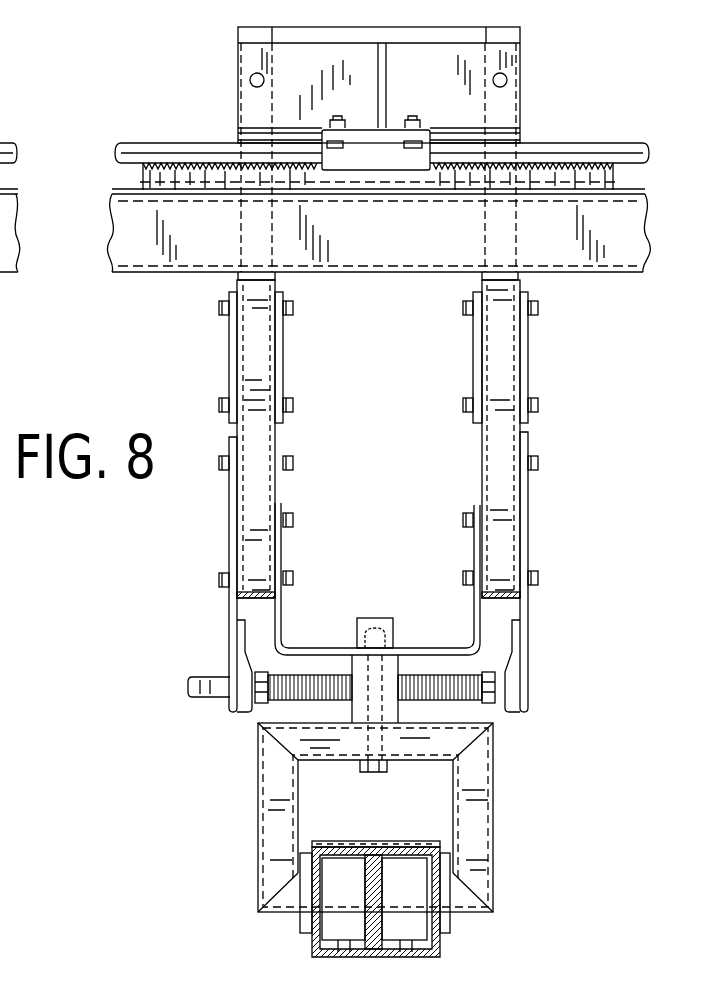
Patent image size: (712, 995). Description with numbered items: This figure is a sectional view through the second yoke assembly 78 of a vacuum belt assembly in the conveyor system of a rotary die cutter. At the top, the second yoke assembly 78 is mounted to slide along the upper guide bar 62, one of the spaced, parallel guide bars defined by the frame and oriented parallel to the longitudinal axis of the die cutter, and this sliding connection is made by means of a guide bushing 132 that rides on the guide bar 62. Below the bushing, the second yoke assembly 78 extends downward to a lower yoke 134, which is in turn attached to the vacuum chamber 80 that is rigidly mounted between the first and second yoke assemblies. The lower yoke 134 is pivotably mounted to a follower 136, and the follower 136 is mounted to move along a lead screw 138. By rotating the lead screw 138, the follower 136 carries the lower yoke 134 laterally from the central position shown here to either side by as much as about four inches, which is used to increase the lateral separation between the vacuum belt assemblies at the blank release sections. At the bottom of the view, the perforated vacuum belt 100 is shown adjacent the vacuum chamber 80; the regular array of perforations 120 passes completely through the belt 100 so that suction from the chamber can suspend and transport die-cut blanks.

The upper guide bar 62 is at (604, 152).
The second yoke assembly 78 is at (536, 497).
The vacuum chamber 80 is at (315, 889).
The vacuum belt 100 is at (437, 957).
The perforations 120 is at (414, 950).
The guide bushing 132 is at (389, 148).
The lower yoke 134 is at (480, 848).
The follower 136 is at (390, 705).
The lead screw 138 is at (430, 683).